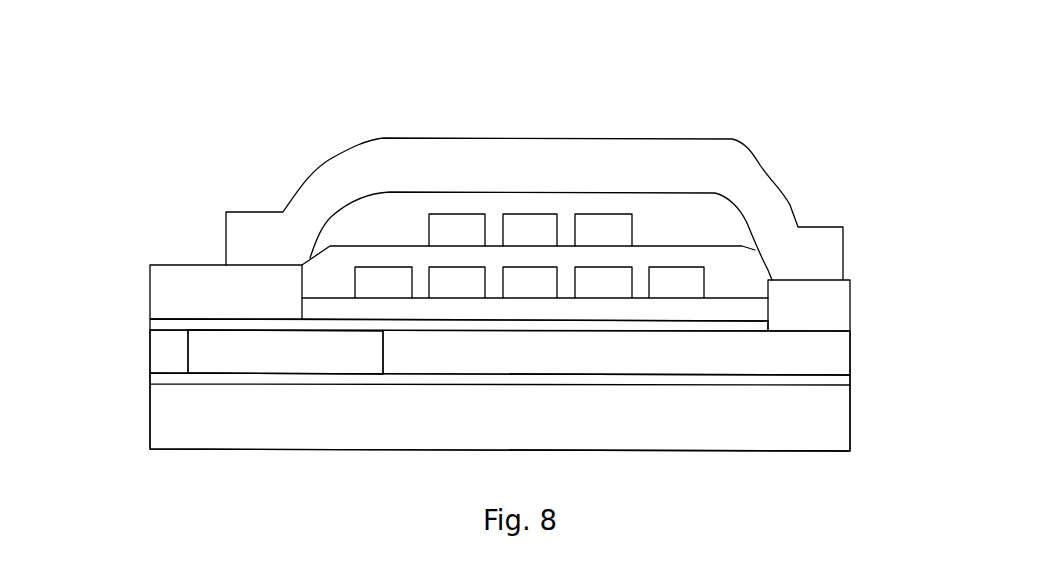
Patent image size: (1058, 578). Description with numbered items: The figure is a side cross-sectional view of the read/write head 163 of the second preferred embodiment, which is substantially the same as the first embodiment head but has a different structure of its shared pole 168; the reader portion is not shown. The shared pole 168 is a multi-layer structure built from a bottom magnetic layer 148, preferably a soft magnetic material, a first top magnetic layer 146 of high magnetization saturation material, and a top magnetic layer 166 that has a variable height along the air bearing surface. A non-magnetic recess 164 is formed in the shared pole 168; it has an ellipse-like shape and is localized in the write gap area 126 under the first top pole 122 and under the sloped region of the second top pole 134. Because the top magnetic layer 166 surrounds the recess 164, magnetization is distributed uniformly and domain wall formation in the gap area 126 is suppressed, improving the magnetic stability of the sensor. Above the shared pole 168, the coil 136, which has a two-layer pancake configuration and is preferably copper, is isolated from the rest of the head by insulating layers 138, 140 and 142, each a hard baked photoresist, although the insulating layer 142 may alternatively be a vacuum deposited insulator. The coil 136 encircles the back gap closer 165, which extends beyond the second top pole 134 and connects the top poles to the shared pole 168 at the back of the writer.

The read/write head 163 is at (252, 105).
The first top pole 122 is at (224, 283).
The second top pole 134 is at (382, 161).
The coil 136 is at (603, 277).
The insulating layer 138 is at (677, 225).
The insulating layer 140 is at (732, 268).
The insulating layer 142 is at (723, 310).
The non-magnetic recess 164 is at (197, 325).
The back gap closer 165 is at (825, 299).
The top magnetic layer 166 is at (179, 350).
The write gap 126 is at (254, 352).
The first top magnetic layer 146 is at (842, 380).
The bottom magnetic layer 148 is at (833, 427).
The shared pole 168 is at (143, 330).